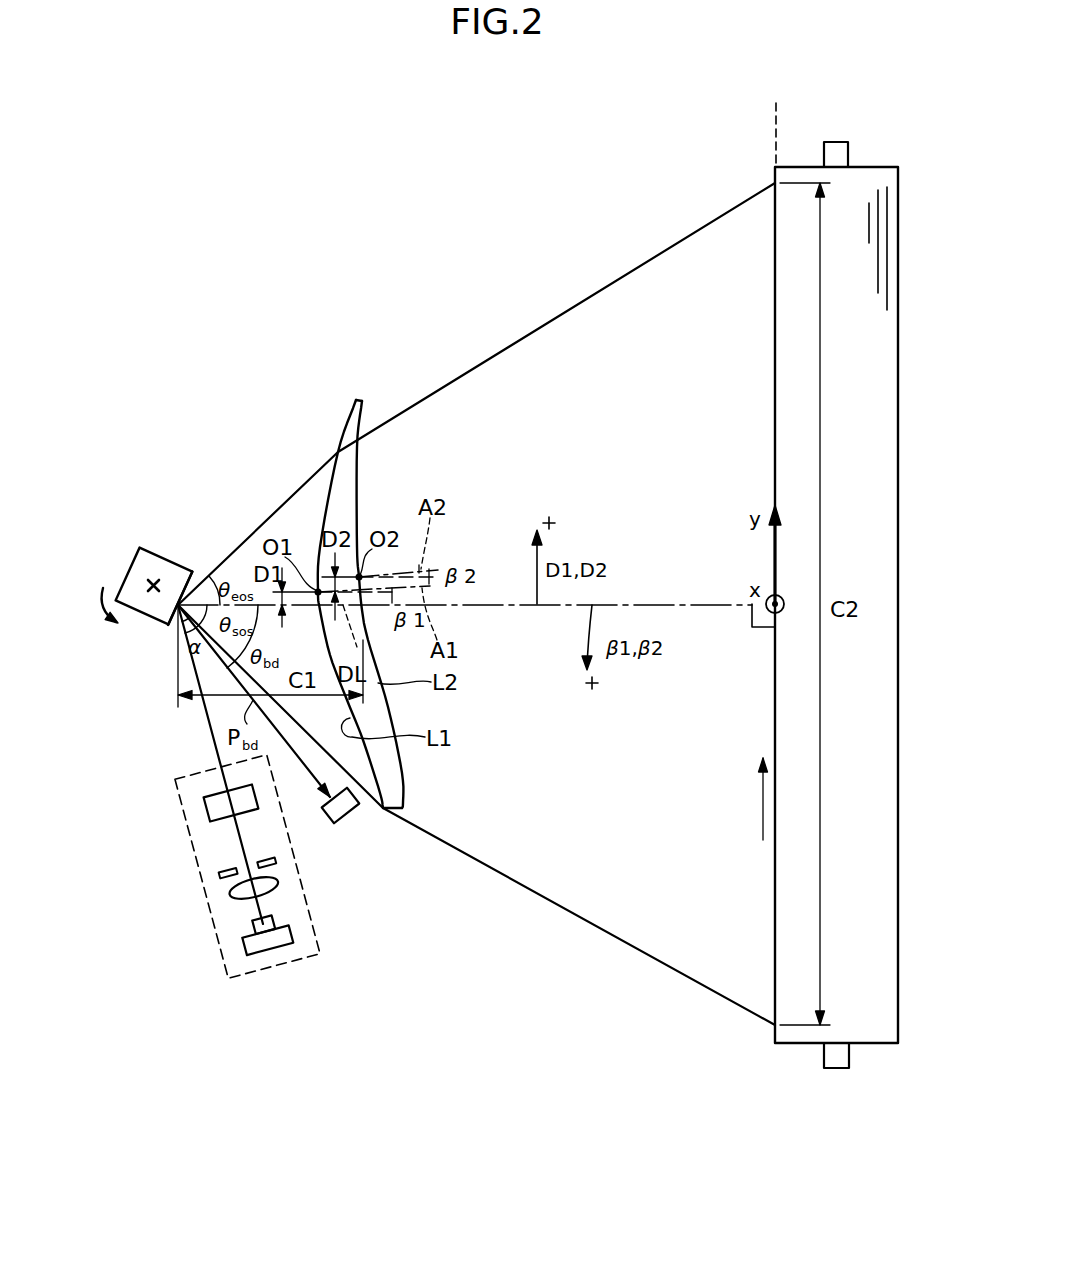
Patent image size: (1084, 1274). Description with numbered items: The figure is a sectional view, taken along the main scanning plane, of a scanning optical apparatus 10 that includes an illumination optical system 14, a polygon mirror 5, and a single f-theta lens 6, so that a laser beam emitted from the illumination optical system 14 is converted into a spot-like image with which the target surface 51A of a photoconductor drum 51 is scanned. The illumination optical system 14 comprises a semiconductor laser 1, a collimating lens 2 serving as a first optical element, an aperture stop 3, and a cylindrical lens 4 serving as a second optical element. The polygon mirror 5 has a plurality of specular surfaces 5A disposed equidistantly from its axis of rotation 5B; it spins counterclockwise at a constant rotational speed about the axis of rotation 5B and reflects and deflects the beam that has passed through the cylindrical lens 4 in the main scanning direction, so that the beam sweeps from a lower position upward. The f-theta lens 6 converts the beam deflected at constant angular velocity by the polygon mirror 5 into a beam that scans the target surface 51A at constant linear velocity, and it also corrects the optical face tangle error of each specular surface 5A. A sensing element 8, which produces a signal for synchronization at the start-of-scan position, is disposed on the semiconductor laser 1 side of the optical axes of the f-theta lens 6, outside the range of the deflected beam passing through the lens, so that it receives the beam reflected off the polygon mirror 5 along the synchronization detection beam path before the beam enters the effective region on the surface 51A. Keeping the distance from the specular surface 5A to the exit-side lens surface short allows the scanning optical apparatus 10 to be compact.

The semiconductor laser 1 is at (243, 946).
The collimating lens 2 is at (235, 892).
The aperture stop 3 is at (228, 870).
The cylindrical lens 4 is at (206, 810).
The polygon mirror 5 is at (150, 548).
The specular surface 5A is at (200, 577).
The axis of rotation 5B is at (154, 595).
The f-theta lens 6 is at (398, 810).
The sensing element 8 is at (343, 821).
The scanning optical apparatus 10 is at (218, 327).
The illumination optical system 14 is at (190, 855).
The photoconductor drum 51 is at (873, 172).
The target surface 51A is at (775, 130).